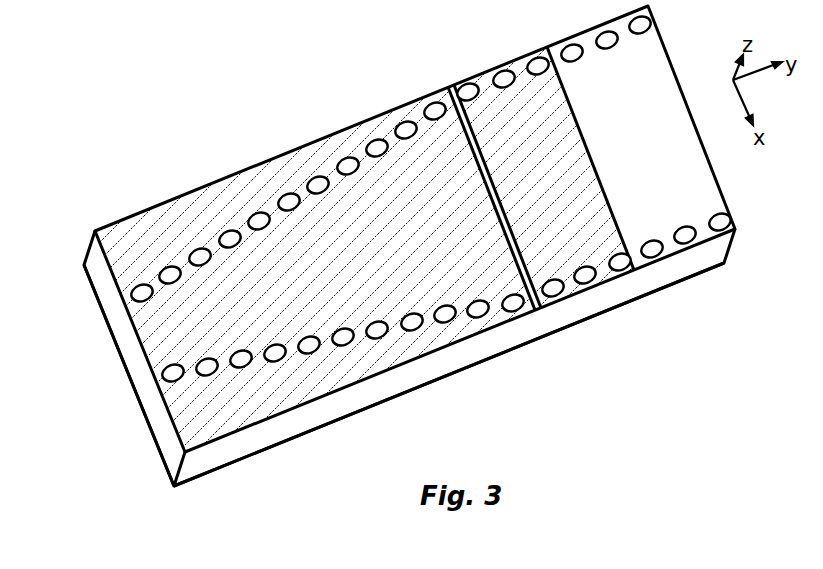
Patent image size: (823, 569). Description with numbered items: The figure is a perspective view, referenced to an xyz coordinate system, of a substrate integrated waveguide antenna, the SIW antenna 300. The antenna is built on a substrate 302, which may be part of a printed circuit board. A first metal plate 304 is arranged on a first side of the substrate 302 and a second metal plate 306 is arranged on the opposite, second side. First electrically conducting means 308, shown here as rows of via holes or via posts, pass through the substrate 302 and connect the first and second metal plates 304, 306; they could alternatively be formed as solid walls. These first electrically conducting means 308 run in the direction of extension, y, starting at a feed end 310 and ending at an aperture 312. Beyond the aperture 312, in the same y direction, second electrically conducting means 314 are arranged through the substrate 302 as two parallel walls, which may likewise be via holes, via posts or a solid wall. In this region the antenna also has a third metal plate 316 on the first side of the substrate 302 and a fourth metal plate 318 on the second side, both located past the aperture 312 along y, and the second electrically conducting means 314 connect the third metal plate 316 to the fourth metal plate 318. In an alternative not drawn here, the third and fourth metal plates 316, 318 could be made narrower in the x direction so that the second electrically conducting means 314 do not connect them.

The SIW antenna 300 is at (216, 118).
The substrate 302 is at (86, 267).
The first metal plate 304 is at (167, 207).
The second metal plate 306 is at (248, 458).
The first electrically conducting means 308 is at (346, 163).
The feed end 310 is at (134, 343).
The aperture 312 is at (493, 197).
The second electrically conducting means 314 is at (459, 85).
The third metal plate 316 is at (525, 90).
The fourth metal plate 318 is at (565, 330).